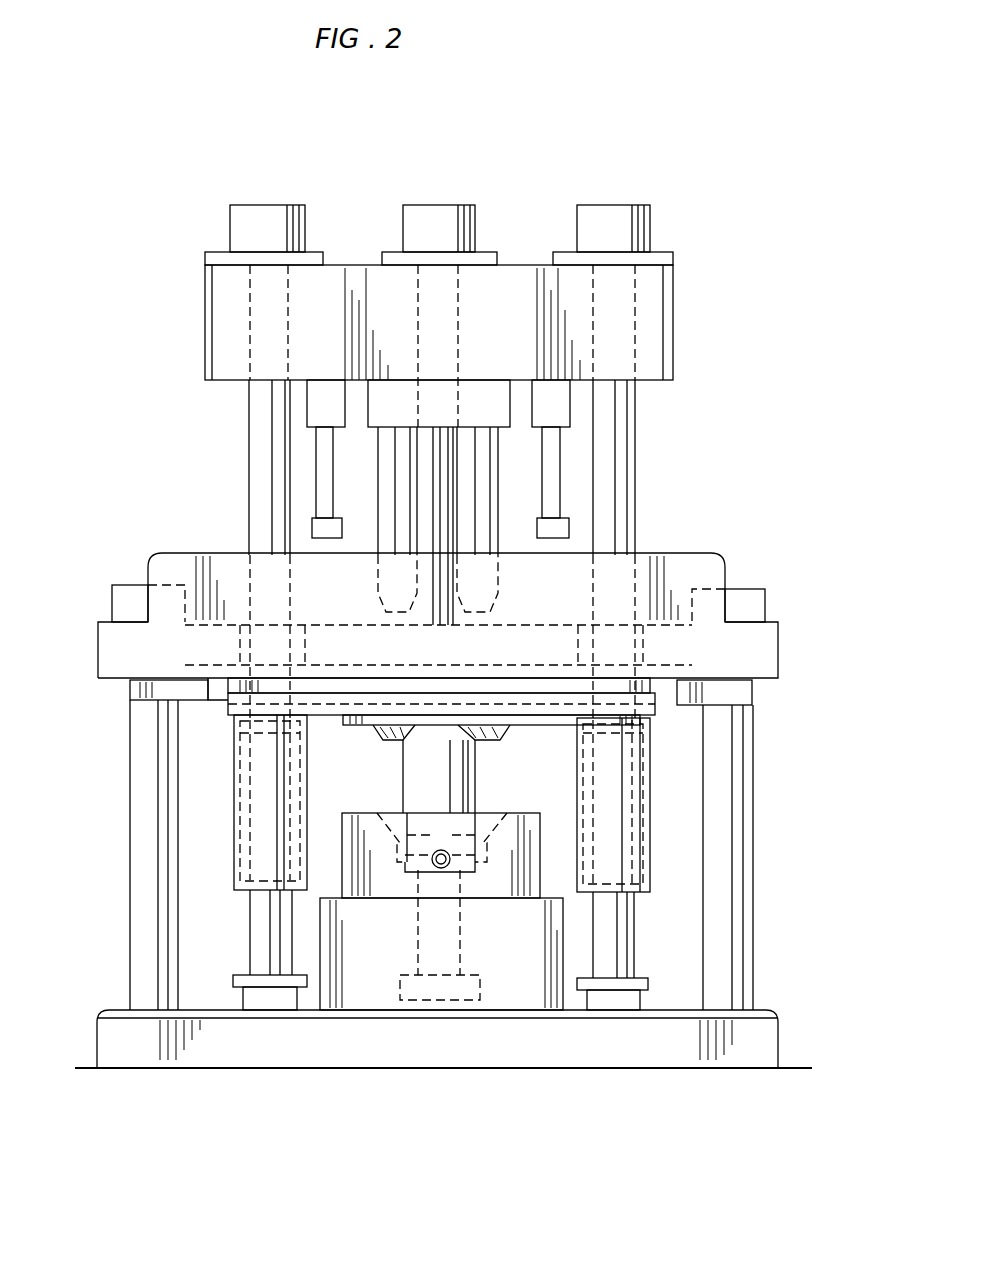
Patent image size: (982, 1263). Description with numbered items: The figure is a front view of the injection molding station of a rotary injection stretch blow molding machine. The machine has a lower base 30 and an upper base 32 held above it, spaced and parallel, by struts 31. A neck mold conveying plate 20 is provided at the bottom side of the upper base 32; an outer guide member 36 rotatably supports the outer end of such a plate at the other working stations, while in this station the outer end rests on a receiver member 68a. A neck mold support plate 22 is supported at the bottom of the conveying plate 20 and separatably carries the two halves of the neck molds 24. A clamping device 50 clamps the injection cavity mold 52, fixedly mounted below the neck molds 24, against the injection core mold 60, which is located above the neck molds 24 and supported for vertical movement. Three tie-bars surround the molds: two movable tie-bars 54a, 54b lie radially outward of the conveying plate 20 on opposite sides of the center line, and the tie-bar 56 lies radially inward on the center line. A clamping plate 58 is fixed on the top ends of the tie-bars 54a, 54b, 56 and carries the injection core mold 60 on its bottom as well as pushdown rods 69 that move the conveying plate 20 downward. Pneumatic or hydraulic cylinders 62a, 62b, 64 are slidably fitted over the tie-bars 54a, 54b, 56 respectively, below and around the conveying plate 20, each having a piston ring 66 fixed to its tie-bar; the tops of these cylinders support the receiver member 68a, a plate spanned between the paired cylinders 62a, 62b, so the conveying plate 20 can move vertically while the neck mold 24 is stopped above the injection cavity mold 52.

The neck mold conveying plate 20 is at (323, 688).
The neck mold support plate 22 is at (348, 722).
The neck mold 24 is at (378, 728).
The lower base 30 is at (115, 1030).
The strut 31 is at (735, 930).
The upper base 32 is at (122, 638).
The outer guide member 36 is at (170, 692).
The clamping device 50 is at (640, 433).
The injection cavity mold 52 is at (528, 835).
The movable tie-bar 54a is at (265, 470).
The movable tie-bar 54b is at (636, 510).
The tie-bar 56 is at (463, 290).
The clamping plate 58 is at (322, 296).
The injection core mold 60 is at (385, 540).
The cylinder 62a is at (258, 845).
The cylinder 62b is at (620, 855).
The cylinder 64 is at (445, 790).
The piston ring 66 is at (238, 725).
The receiver member 68a is at (228, 700).
The pushdown rod 69 is at (322, 452).